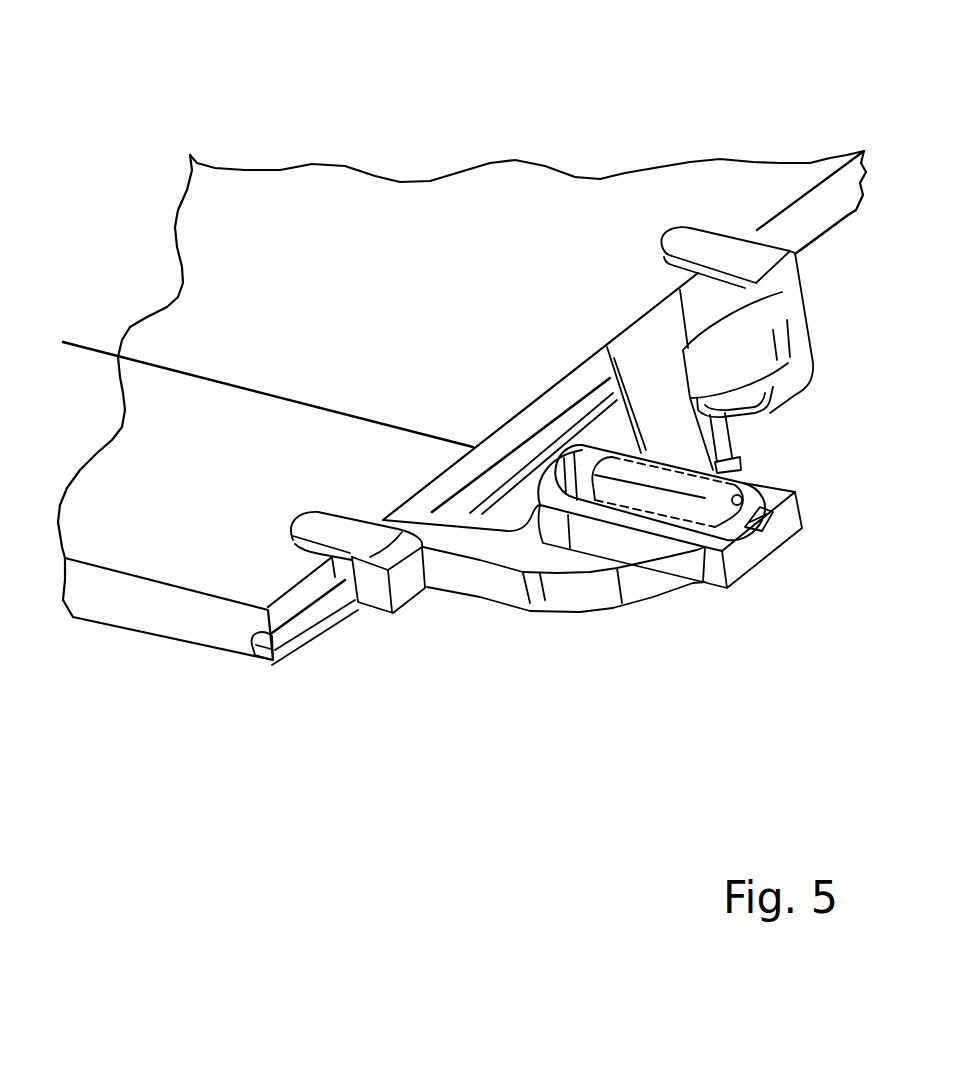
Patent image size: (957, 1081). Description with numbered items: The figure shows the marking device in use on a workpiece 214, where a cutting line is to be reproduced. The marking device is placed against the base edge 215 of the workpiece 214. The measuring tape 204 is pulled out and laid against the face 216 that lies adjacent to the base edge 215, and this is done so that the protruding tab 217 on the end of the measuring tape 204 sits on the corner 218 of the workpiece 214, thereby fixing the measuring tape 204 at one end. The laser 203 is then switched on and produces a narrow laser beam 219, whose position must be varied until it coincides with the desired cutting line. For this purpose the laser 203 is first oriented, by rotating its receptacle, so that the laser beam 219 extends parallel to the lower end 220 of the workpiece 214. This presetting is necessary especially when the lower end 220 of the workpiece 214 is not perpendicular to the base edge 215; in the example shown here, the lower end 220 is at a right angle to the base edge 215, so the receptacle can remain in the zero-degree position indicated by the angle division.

The laser 203 is at (712, 587).
The measuring tape 204 is at (297, 628).
The workpiece 214 is at (243, 560).
The base edge 215 is at (792, 208).
The face 216 is at (808, 220).
The protruding tab 217 is at (257, 663).
The corner 218 is at (274, 661).
The laser beam 219 is at (277, 393).
The lower end 220 is at (123, 603).